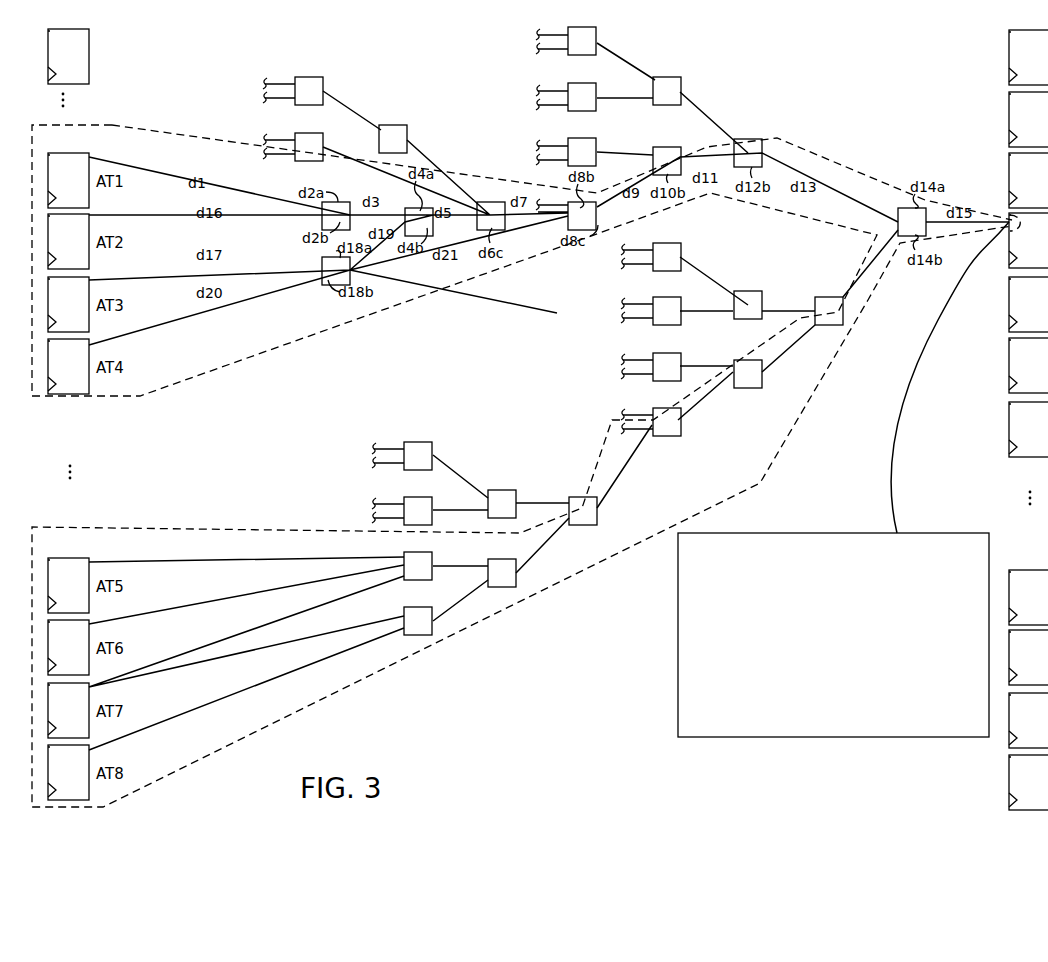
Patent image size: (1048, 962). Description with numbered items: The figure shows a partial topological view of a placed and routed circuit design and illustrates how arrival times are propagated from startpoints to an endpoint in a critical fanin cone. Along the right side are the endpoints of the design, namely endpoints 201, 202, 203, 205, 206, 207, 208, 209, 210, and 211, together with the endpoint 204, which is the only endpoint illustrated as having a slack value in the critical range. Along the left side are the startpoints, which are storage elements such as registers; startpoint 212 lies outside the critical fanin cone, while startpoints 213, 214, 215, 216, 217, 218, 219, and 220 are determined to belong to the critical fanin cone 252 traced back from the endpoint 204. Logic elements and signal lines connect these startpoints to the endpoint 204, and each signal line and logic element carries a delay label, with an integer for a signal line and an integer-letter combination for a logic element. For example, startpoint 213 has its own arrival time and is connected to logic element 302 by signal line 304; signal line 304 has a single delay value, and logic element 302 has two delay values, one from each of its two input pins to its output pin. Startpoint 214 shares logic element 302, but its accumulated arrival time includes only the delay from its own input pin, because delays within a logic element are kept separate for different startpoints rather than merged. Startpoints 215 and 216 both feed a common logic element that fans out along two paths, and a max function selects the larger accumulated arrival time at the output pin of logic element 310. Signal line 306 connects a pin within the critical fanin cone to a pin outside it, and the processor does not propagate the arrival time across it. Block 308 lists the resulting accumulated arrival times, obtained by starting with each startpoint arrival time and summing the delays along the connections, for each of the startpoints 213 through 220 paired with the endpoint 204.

The endpoint 201 is at (1028, 57).
The endpoint 202 is at (1028, 119).
The endpoint 203 is at (1028, 180).
The endpoint 204 is at (1028, 240).
The endpoint 205 is at (1028, 304).
The endpoint 206 is at (1028, 365).
The endpoint 207 is at (1028, 429).
The endpoint 208 is at (1028, 597).
The endpoint 209 is at (1028, 657).
The endpoint 210 is at (1028, 720).
The endpoint 211 is at (1028, 782).
The startpoint 212 is at (68, 56).
The startpoint 213 is at (68, 180).
The startpoint 214 is at (68, 241).
The startpoint 215 is at (68, 304).
The startpoint 216 is at (68, 366).
The startpoint 217 is at (68, 585).
The startpoint 218 is at (68, 647).
The startpoint 219 is at (68, 710).
The startpoint 220 is at (68, 772).
The critical fanin cone 252 is at (870, 178).
The logic element 302 is at (321, 214).
The signal line 304 is at (202, 181).
The signal line 306 is at (483, 300).
The block 308 is at (855, 533).
The logic element 310 is at (568, 204).